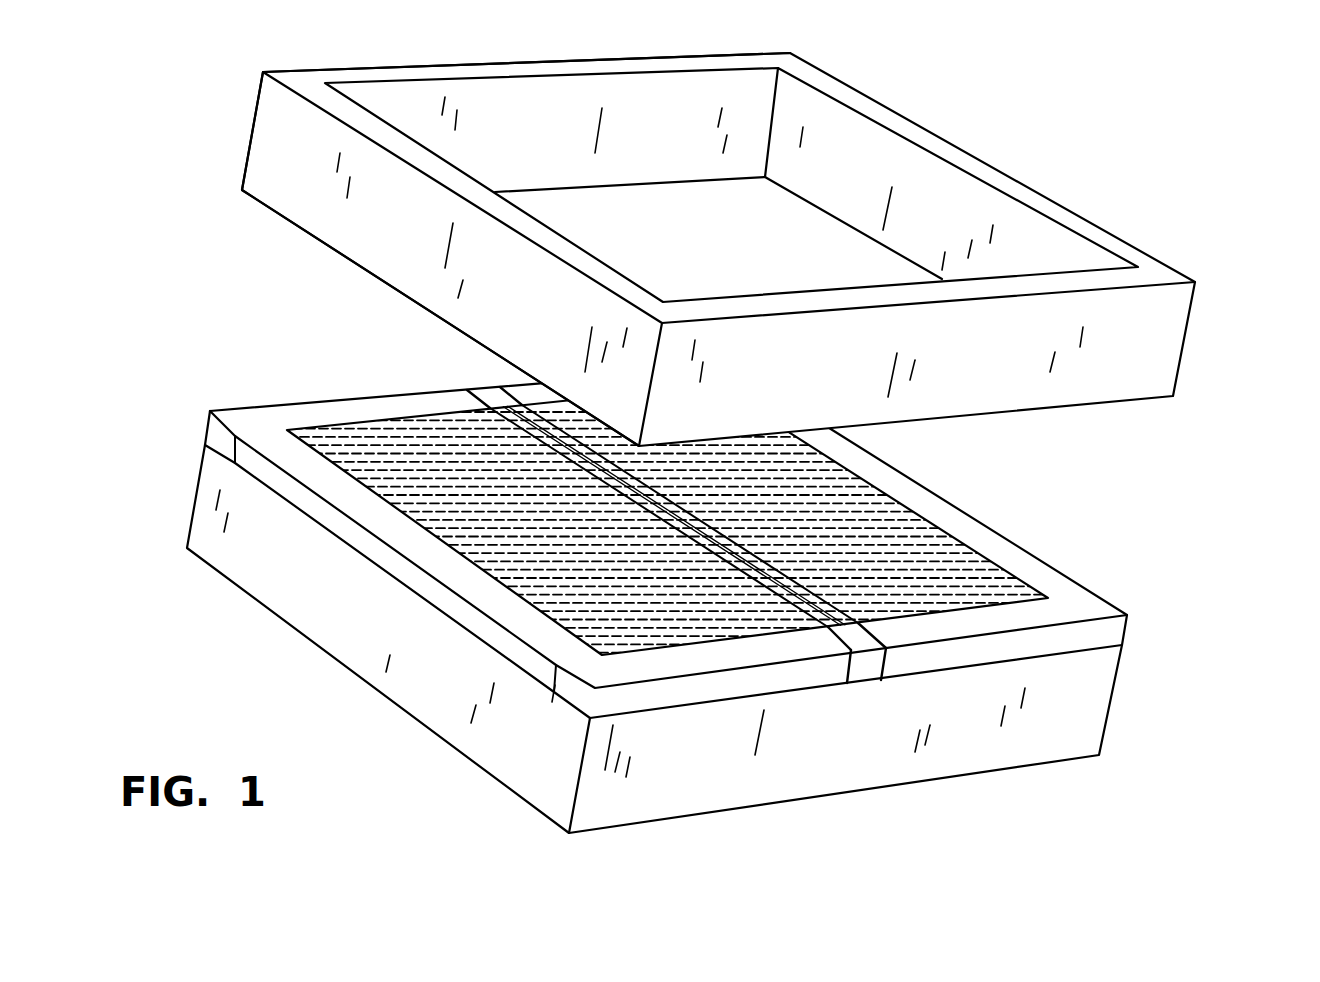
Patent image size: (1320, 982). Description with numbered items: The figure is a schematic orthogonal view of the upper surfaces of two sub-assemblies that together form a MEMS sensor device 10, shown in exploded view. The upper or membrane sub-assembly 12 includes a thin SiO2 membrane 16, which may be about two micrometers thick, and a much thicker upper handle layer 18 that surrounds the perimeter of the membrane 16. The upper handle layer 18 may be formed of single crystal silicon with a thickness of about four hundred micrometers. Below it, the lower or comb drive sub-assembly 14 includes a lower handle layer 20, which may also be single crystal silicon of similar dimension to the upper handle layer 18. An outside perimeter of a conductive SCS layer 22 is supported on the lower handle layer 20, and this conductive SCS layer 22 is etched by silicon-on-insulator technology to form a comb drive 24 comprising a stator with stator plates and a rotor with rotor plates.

The MEMS sensor device 10 is at (1162, 541).
The membrane sub-assembly 12 is at (703, 249).
The comb drive sub-assembly 14 is at (706, 589).
The SiO2 membrane 16 is at (696, 227).
The upper handle layer 18 is at (280, 193).
The lower handle layer 20 is at (1080, 715).
The conductive SCS layer 22 is at (988, 545).
The comb drive 24 is at (445, 443).